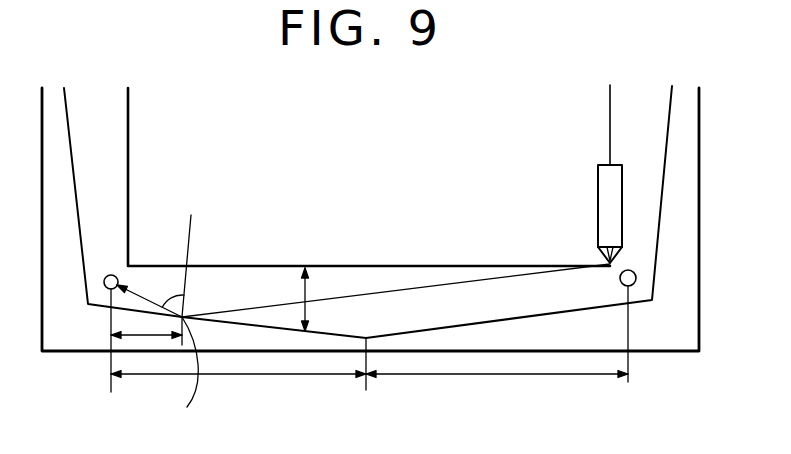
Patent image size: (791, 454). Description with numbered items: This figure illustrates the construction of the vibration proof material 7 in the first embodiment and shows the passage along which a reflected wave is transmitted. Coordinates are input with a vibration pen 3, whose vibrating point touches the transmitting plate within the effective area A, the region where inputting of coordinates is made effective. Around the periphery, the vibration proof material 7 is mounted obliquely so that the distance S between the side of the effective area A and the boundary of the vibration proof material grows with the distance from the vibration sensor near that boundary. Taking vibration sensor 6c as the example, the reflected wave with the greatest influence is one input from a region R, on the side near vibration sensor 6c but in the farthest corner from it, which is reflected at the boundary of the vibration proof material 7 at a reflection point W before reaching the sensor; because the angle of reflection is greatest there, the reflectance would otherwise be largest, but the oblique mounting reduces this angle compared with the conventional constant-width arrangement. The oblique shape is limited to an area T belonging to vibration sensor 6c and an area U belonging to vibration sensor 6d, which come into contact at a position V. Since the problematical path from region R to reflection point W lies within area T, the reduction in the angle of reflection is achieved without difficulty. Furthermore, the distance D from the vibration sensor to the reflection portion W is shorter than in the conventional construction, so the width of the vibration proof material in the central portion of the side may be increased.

The vibration pen 3 is at (598, 170).
The vibration sensor 6c is at (110, 275).
The vibration sensor 6d is at (637, 272).
The vibration proof material 7 is at (693, 153).
The effective area A is at (380, 154).
The region R is at (396, 275).
The distance S is at (310, 296).
The area T is at (238, 389).
The area U is at (497, 347).
The position V is at (365, 379).
The reflection point W is at (185, 329).
The distance D is at (142, 336).